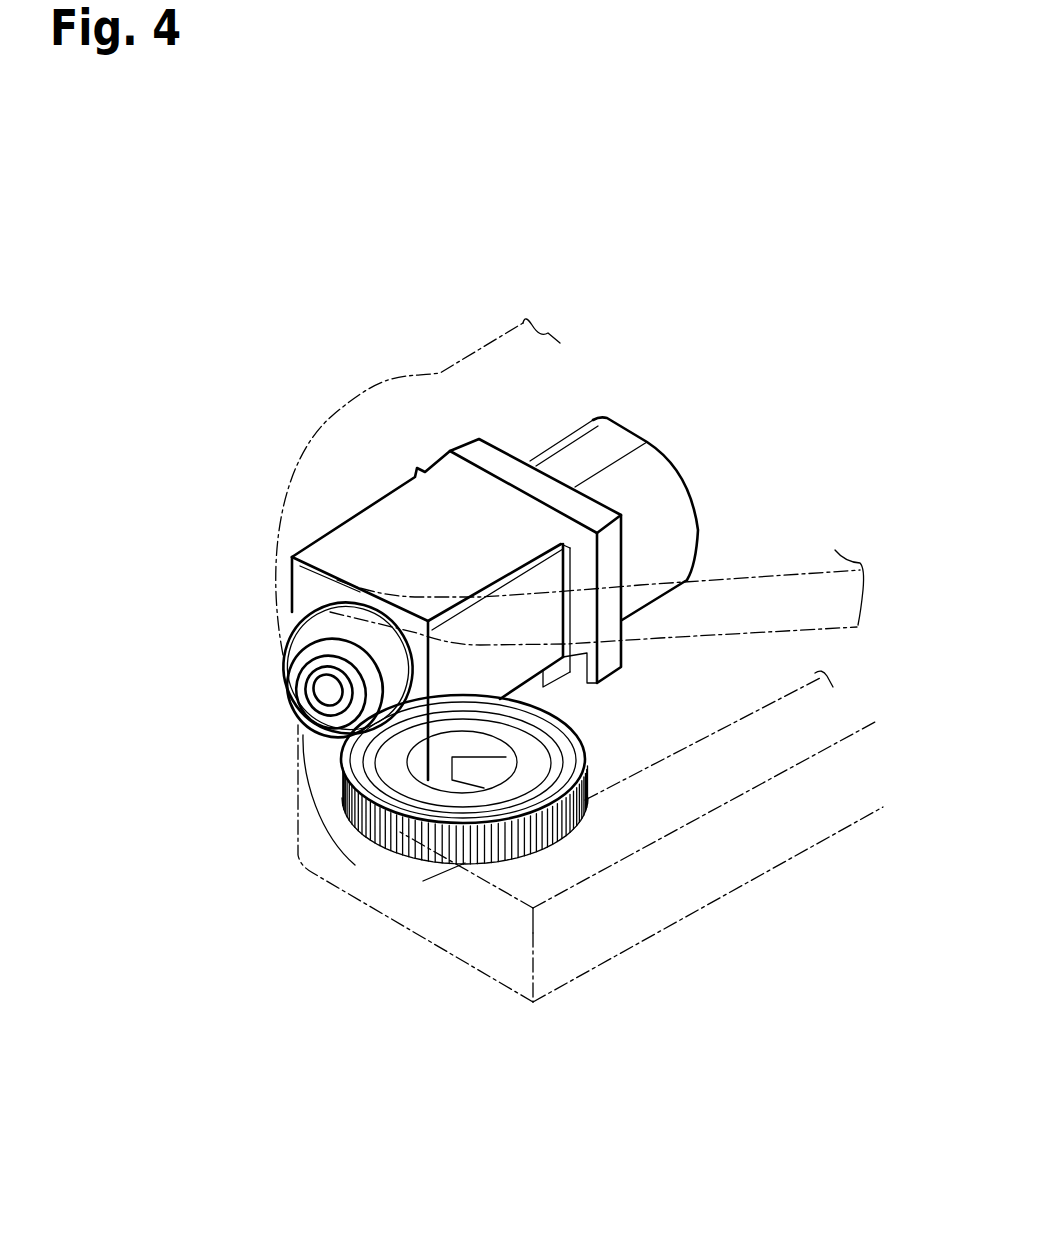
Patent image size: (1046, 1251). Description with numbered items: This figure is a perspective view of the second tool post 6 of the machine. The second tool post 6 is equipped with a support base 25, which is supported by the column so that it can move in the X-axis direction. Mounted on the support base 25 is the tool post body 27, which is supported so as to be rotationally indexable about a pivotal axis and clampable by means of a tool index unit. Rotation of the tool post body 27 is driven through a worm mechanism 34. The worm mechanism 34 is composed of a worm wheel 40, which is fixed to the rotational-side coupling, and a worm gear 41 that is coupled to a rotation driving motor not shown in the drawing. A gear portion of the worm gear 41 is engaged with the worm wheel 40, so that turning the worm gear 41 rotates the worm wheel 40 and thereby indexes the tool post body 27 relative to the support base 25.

The second tool post 6 is at (270, 378).
The tool post body 27 is at (322, 526).
The worm mechanism 34 is at (423, 876).
The worm wheel 40 is at (392, 852).
The worm gear 41 is at (437, 880).
The support base 25 is at (493, 990).